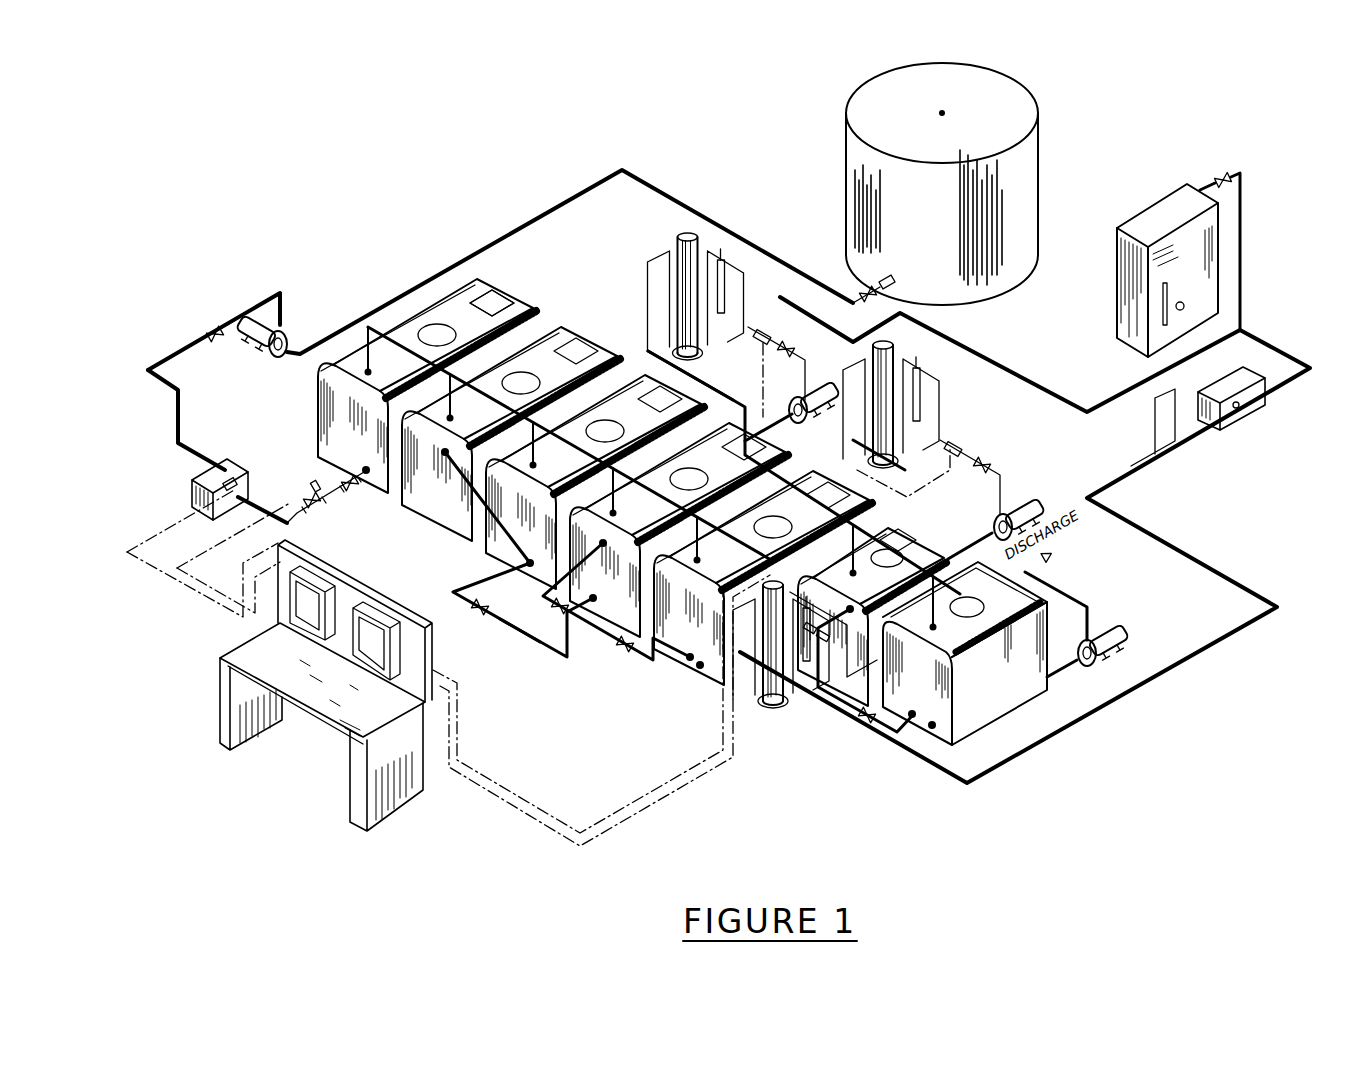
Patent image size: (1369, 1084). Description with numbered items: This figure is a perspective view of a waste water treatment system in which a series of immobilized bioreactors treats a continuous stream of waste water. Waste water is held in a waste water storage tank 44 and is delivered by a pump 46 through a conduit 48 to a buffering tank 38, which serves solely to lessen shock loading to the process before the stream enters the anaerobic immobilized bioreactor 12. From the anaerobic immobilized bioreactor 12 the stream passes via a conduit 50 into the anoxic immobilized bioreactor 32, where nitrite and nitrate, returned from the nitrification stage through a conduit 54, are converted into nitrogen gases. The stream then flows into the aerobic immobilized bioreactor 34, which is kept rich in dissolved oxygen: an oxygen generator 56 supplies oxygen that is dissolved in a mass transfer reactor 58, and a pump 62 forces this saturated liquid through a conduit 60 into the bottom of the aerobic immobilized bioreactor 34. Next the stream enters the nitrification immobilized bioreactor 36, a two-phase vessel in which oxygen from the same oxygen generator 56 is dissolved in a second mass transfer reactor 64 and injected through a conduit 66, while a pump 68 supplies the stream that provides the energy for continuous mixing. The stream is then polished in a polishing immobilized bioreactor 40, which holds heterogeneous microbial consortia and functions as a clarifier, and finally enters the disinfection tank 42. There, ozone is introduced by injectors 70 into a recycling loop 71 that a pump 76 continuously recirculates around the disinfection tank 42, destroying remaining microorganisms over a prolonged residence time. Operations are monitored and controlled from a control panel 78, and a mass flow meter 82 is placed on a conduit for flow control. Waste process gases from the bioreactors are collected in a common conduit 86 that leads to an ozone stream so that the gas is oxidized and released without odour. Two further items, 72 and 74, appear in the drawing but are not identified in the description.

The anaerobic immobilized bioreactor 12 is at (435, 503).
The anoxic immobilized bioreactor 32 is at (480, 606).
The aerobic immobilized bioreactor 34 is at (607, 628).
The nitrification immobilized bioreactor 36 is at (692, 615).
The buffering tank 38 is at (318, 452).
The polishing immobilized bioreactor 40 is at (862, 667).
The disinfection tank 42 is at (1010, 677).
The waste water storage tank 44 is at (862, 237).
The pump 46 is at (290, 333).
The conduit 48 is at (423, 285).
The conduit 50 is at (457, 505).
The conduit 54 is at (532, 637).
The oxygen generator 56 is at (1150, 240).
The mass transfer reactor 58 is at (676, 242).
The conduit 60 is at (690, 368).
The pump 62 is at (800, 398).
The second mass transfer reactor 64 is at (865, 348).
The conduit 66 is at (840, 462).
The pump 68 is at (1032, 505).
The injectors 70 is at (825, 685).
The recycling loop 71 is at (1055, 587).
The control unit 72 is at (1236, 408).
The filter column 74 is at (778, 710).
The pump 76 is at (1125, 638).
The control panel 78 is at (340, 708).
The mass flow meter 82 is at (207, 515).
The common conduit 86 is at (452, 335).